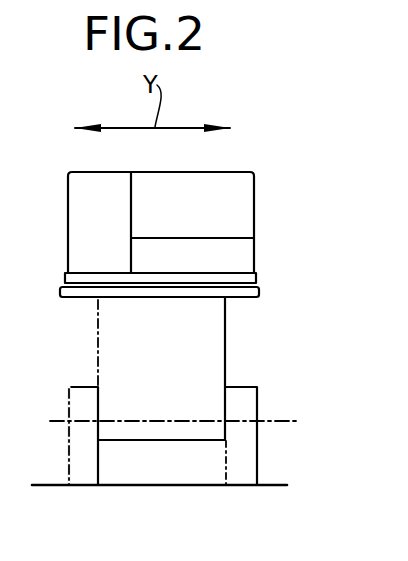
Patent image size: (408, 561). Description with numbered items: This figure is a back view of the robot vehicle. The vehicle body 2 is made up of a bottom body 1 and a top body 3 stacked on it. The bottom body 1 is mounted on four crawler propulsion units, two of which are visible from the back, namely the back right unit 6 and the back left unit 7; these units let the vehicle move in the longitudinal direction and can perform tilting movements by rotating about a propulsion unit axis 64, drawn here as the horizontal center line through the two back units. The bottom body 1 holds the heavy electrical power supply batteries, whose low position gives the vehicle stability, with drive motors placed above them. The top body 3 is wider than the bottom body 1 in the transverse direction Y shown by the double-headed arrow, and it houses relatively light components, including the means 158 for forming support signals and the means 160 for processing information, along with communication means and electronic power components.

The bottom body 1 is at (98, 355).
The vehicle body 2 is at (243, 336).
The top body 3 is at (85, 190).
The back right propulsion unit 6 is at (240, 496).
The back left propulsion unit 7 is at (85, 497).
The propulsion unit axis 64 is at (277, 418).
The means for forming support signals 158 is at (244, 262).
The means for processing information 160 is at (244, 193).